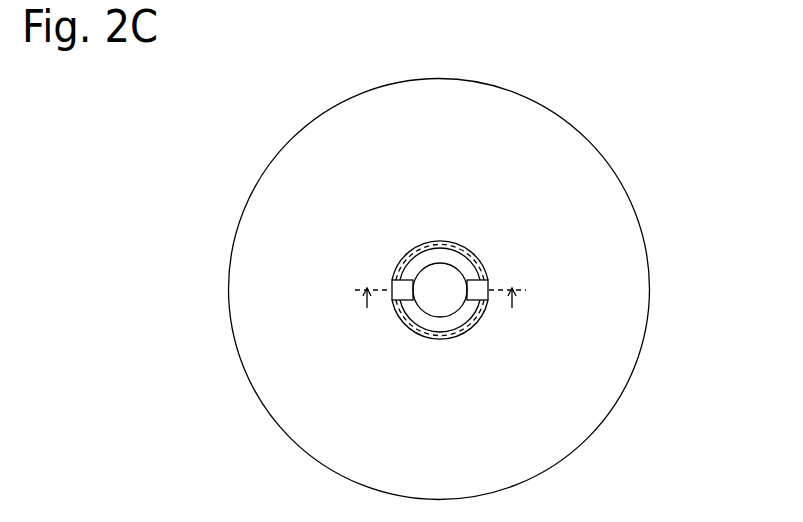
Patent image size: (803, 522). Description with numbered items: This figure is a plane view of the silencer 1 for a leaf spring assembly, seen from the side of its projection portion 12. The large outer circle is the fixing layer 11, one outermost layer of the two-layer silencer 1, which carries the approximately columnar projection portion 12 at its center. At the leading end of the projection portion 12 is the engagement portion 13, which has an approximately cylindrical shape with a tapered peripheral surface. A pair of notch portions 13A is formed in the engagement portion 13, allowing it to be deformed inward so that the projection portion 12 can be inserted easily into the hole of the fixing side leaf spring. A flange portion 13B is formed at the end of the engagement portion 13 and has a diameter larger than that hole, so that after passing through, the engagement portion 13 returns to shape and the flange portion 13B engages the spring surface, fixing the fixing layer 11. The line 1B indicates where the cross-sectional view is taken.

The silencer 1 is at (623, 128).
The fixing layer 11 is at (622, 336).
The projection portion 12 is at (441, 245).
The engagement portion 13 is at (485, 262).
The notch portions 13A is at (408, 294).
The flange portion 13B is at (474, 258).
The line 1B- 1B is at (440, 315).